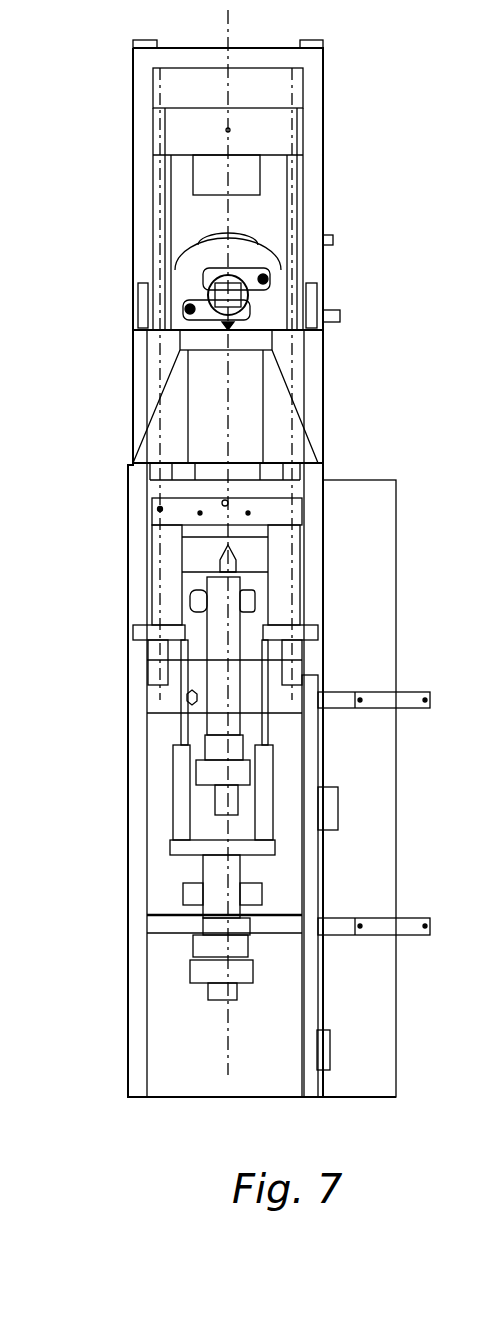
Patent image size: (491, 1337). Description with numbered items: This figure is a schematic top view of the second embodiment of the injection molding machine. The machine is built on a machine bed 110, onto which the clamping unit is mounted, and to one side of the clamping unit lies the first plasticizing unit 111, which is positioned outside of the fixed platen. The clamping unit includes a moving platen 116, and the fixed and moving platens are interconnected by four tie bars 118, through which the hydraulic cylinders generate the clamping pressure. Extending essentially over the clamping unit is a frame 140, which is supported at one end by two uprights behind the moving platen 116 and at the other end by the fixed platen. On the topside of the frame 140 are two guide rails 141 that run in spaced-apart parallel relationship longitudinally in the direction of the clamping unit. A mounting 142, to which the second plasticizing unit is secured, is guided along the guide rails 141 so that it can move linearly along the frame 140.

The machine bed 110 is at (130, 993).
The first plasticizing unit 111 is at (165, 762).
The moving platen 116 is at (275, 128).
The tie bars 118 is at (160, 212).
The frame 140 is at (315, 190).
The guide rails 141 is at (140, 306).
The mounting 142 is at (305, 368).